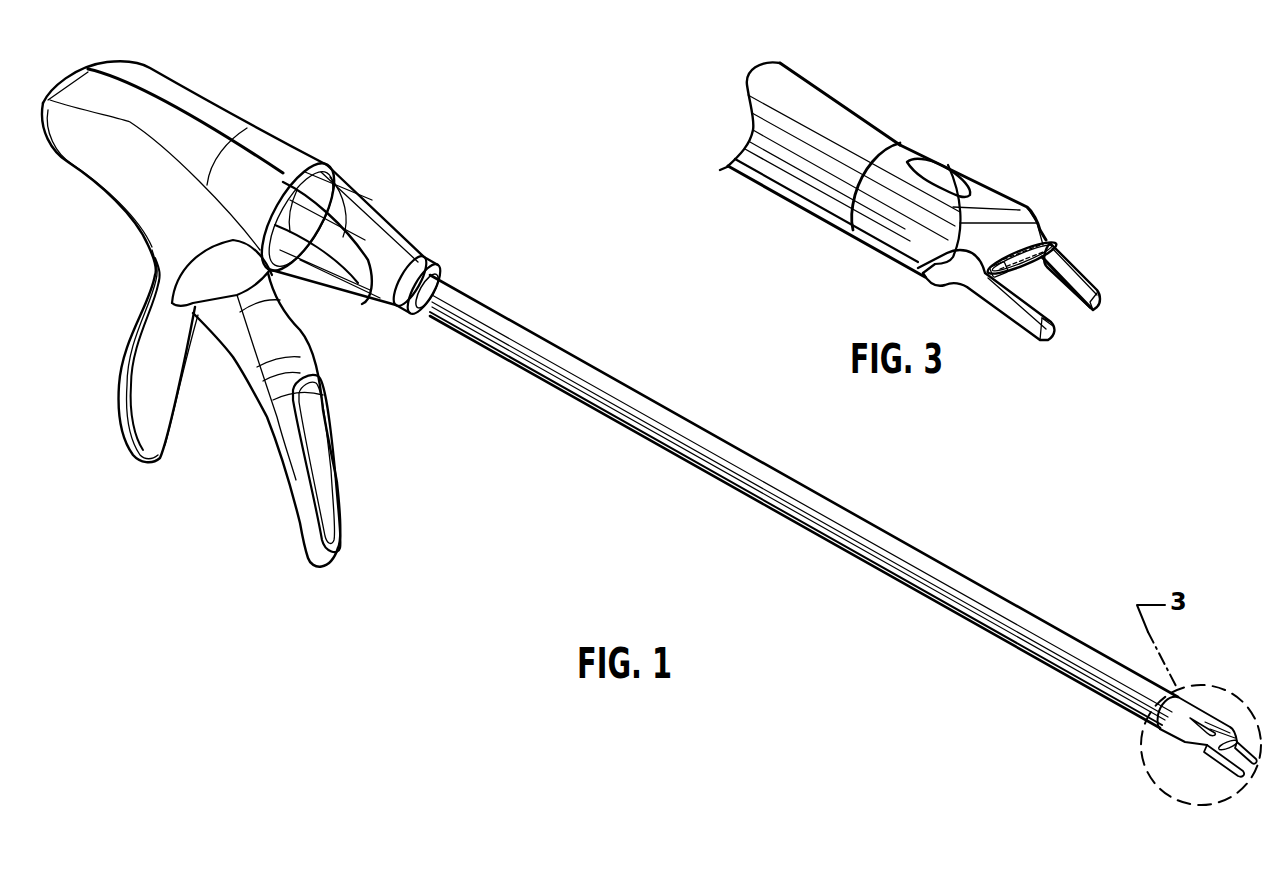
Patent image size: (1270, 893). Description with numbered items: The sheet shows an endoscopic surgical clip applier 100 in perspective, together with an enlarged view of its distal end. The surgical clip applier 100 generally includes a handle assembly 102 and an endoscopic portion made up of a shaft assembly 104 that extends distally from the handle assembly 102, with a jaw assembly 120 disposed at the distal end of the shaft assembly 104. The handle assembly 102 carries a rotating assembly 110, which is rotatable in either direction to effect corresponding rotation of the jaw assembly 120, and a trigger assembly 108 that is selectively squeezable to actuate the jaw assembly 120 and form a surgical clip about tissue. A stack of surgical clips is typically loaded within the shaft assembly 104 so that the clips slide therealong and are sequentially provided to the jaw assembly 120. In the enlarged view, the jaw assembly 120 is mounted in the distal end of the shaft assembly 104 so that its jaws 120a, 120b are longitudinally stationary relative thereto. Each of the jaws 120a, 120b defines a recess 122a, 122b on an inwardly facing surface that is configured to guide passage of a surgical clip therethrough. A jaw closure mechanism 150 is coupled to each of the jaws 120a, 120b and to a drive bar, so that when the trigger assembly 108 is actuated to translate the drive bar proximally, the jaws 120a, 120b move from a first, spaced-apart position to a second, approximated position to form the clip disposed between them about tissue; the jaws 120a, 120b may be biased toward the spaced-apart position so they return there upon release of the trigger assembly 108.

In FIG. 1, the endoscopic surgical clip applier 100 is at (649, 440).
In FIG. 1, the handle assembly 102 is at (239, 101).
In FIG. 1, the shaft assembly 104 is at (594, 353).
In FIG. 3, the shaft assembly 104 is at (841, 137).
In FIG. 1, the trigger assembly 108 is at (342, 436).
In FIG. 1, the rotating assembly 110 is at (405, 221).
In FIG. 1, the jaw assembly 120 is at (1219, 772).
In FIG. 3, the jaw assembly 120 is at (990, 246).
In FIG. 3, the first jaw 120a is at (999, 315).
In FIG. 3, the second jaw 120b is at (1085, 292).
In FIG. 3, the recess of first jaw 122a is at (1057, 332).
In FIG. 3, the recess of second jaw 122b is at (1080, 317).
In FIG. 3, the jaw closure mechanism 150 is at (1059, 228).